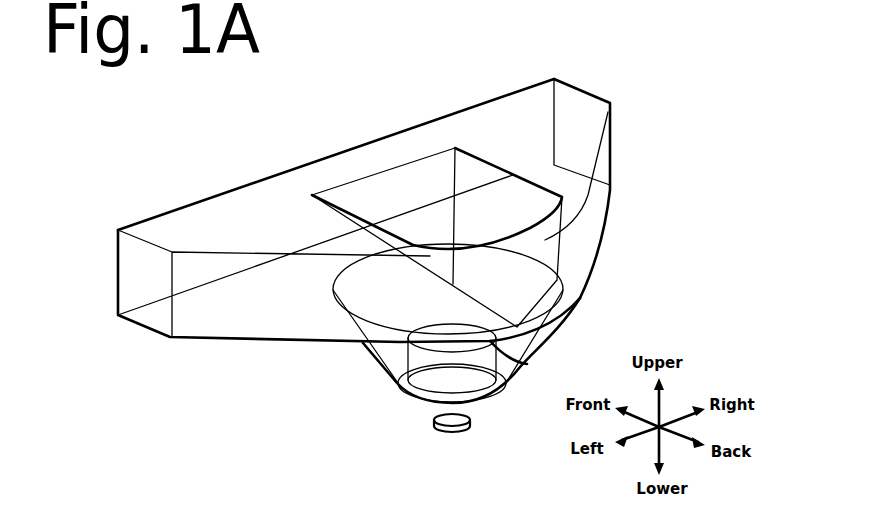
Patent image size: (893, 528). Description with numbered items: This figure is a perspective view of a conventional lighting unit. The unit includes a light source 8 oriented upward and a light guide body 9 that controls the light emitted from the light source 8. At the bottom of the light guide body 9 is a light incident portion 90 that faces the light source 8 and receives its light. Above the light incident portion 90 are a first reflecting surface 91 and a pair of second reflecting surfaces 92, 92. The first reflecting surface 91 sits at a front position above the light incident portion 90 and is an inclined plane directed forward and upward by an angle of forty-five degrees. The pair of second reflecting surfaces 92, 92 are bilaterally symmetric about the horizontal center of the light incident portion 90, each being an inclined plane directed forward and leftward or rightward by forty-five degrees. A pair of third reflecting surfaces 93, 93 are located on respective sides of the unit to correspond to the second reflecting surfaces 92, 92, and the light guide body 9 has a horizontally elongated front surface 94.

The light source 8 is at (462, 433).
The light guide body 9 is at (582, 90).
The light incident portion 90 is at (373, 378).
The first reflecting surface 91 is at (377, 193).
The second reflecting surfaces 92 is at (482, 177).
The third reflecting surfaces 93 is at (597, 215).
The front surface 94 is at (245, 183).